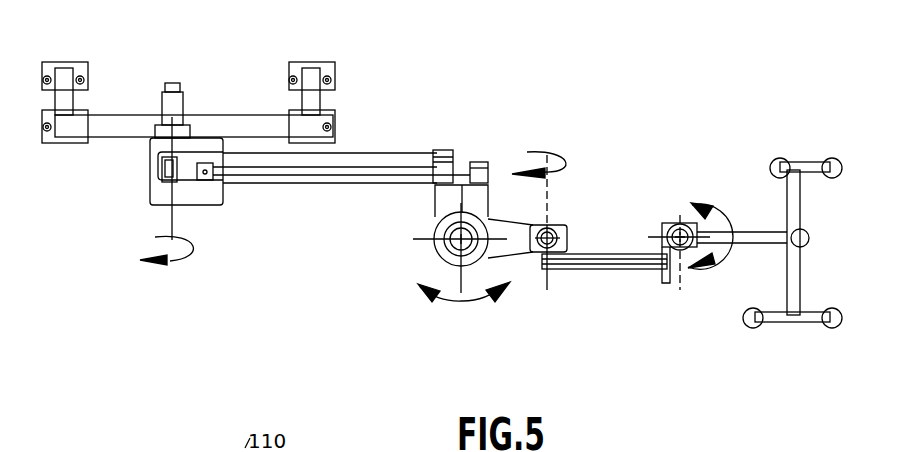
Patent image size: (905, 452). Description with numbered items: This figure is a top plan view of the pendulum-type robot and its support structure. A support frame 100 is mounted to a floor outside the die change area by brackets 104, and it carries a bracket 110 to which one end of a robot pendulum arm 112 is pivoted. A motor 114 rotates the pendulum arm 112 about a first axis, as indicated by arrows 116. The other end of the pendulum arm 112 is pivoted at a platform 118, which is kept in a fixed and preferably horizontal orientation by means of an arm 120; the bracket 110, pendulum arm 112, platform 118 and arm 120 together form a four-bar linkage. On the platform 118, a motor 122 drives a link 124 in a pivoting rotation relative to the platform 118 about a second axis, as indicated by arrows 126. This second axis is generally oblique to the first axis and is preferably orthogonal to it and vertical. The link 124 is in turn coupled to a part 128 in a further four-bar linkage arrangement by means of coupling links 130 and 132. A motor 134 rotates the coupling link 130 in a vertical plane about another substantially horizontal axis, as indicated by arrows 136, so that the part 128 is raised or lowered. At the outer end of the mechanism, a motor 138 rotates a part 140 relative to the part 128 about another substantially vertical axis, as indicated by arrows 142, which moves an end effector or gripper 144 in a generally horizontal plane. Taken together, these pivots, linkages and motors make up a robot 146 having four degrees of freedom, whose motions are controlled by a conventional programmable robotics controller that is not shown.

The support frame 100 is at (230, 113).
The brackets 104 is at (85, 112).
The bracket 110 is at (153, 190).
The robot pendulum arm 112 is at (352, 183).
The motor 114 is at (182, 92).
The arrows 116 is at (190, 253).
The platform 118 is at (435, 208).
The arm 120 is at (357, 152).
The motor 122 is at (443, 262).
The link 124 is at (493, 263).
The arrows 126 is at (458, 300).
The part 128 is at (662, 225).
The coupling link 130 is at (635, 268).
The coupling link 132 is at (590, 267).
The motor 134 is at (553, 223).
The arrows 136 is at (555, 152).
The motor 138 is at (685, 257).
The part 140 is at (687, 227).
The arrows 142 is at (728, 215).
The end effector or gripper 144 is at (803, 293).
The robot 146 is at (408, 155).